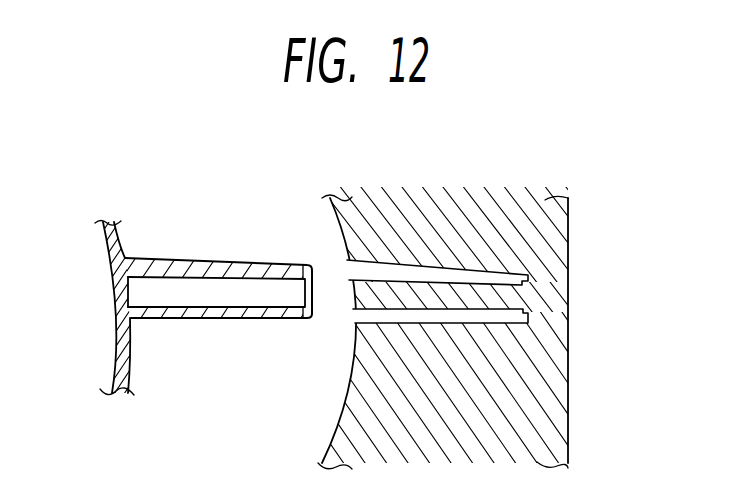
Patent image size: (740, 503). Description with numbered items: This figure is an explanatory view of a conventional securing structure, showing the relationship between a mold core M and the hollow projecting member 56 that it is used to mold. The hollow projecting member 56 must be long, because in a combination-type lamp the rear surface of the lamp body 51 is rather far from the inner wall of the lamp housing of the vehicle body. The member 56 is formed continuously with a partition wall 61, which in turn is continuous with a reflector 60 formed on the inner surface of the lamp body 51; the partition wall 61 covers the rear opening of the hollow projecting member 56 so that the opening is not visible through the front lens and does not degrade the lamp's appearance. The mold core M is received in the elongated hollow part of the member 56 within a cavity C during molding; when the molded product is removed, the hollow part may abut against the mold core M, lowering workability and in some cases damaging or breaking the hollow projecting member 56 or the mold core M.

The mold core M is at (568, 293).
The cavity groove C is at (402, 280).
The reflector 60 is at (117, 349).
The lamp body 51 is at (133, 375).
The hollow projecting member 56 is at (212, 321).
The partition wall 61 is at (130, 291).